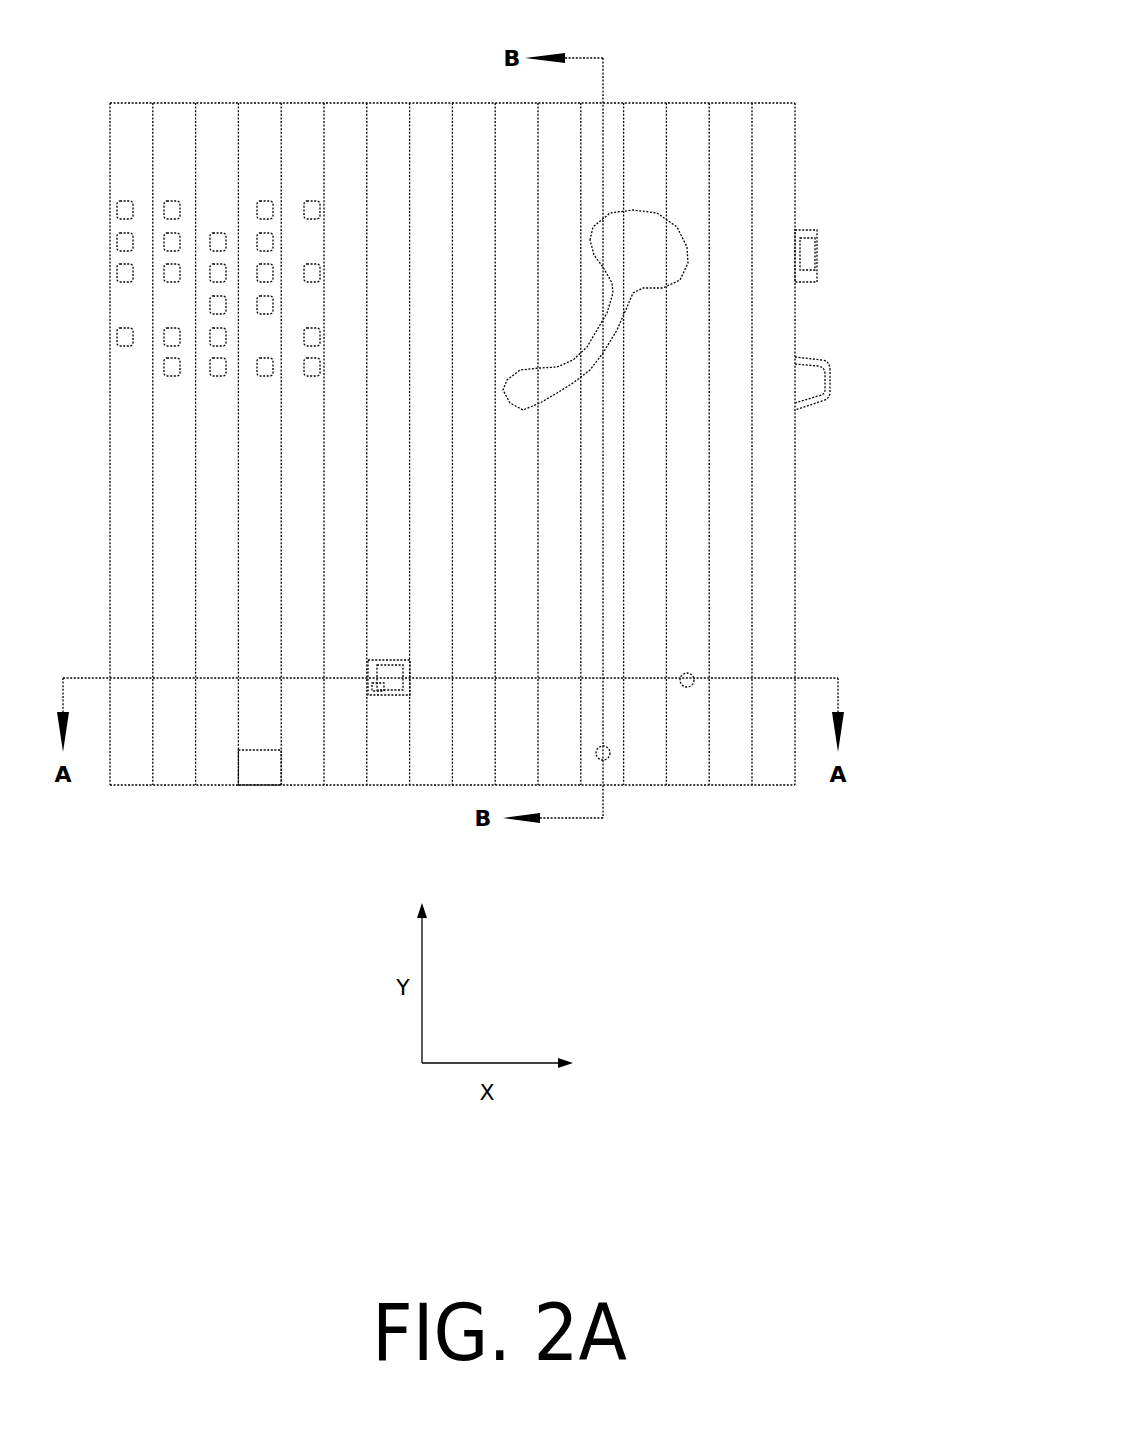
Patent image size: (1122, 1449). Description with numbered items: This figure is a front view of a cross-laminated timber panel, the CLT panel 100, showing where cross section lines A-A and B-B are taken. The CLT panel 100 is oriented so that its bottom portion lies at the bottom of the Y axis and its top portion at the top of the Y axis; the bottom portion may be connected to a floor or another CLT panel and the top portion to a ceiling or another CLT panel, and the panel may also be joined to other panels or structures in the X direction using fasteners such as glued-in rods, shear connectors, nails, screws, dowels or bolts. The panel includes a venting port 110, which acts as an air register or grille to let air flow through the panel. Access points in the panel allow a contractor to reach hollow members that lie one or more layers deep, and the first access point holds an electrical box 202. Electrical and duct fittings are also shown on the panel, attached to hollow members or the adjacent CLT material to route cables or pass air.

The CLT panel 100 is at (764, 41).
The venting port 110 is at (660, 309).
The electrical box 202 is at (385, 695).